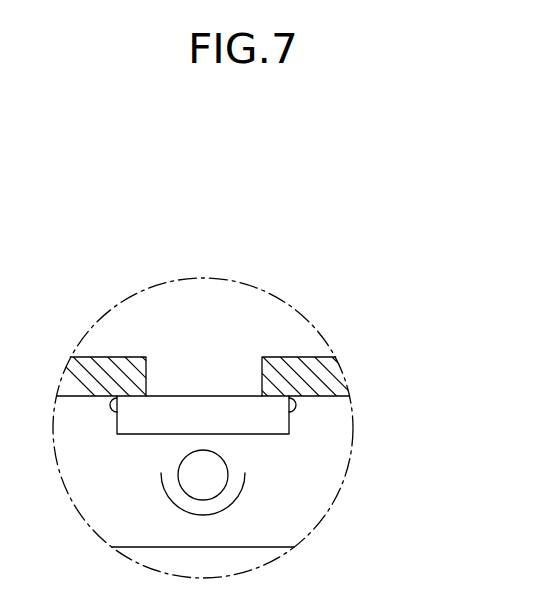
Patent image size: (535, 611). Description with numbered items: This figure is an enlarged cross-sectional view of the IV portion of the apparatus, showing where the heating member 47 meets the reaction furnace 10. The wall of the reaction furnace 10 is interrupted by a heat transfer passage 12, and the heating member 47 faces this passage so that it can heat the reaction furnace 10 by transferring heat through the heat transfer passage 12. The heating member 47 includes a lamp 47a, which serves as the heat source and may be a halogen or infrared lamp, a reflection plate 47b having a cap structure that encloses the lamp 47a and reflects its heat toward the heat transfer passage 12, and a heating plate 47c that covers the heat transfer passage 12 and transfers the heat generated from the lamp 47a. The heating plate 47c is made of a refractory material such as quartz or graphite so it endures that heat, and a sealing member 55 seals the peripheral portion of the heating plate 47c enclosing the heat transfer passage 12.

The IV portion IV is at (203, 279).
The reaction furnace 10 is at (330, 373).
The heat transfer passage 12 is at (183, 374).
The sealing member 55 is at (296, 404).
The heating member 47 is at (293, 459).
The lamp 47a is at (228, 466).
The reflection plate 47b is at (240, 500).
The heating plate 47c is at (282, 422).